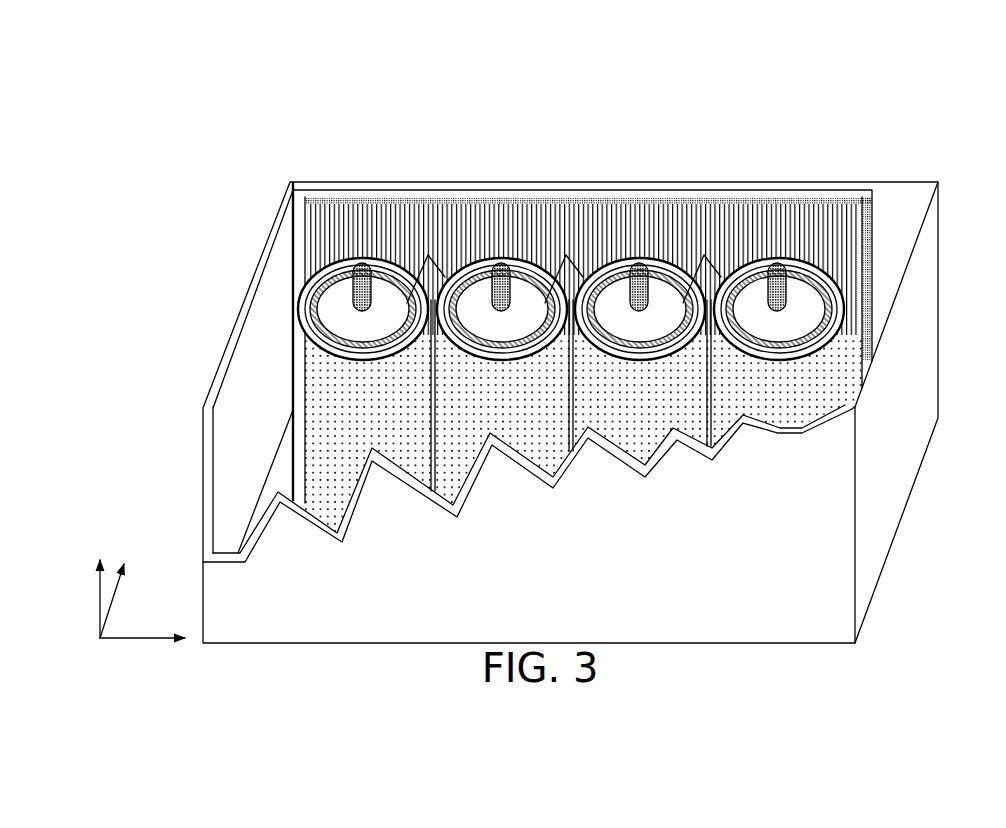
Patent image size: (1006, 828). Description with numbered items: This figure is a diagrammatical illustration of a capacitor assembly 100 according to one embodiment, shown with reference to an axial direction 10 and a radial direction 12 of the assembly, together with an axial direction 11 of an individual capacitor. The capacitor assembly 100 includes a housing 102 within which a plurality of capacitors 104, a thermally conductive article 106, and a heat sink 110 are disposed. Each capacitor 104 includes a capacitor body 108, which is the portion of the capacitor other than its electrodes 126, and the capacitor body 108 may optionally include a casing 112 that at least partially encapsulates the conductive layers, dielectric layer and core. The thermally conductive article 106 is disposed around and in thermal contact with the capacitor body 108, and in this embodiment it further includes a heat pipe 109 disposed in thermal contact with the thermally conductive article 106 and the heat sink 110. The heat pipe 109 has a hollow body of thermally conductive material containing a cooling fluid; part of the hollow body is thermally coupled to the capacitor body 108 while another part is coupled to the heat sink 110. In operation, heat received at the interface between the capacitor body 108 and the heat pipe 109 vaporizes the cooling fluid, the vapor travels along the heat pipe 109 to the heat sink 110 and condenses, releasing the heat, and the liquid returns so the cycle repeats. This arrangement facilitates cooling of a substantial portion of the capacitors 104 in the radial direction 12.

The capacitor assembly 100 is at (231, 128).
The housing 102 is at (940, 274).
The capacitors 104 is at (770, 243).
The thermally conductive article 106 is at (306, 288).
The capacitor body 108 is at (740, 297).
The heat pipe 109 is at (835, 414).
The heat sink 110 is at (803, 218).
The casing 112 is at (408, 317).
The electrodes 126 is at (562, 356).
The axial direction 10 is at (153, 636).
The axial direction of the capacitor 11 is at (100, 592).
The radial direction 12 is at (118, 591).